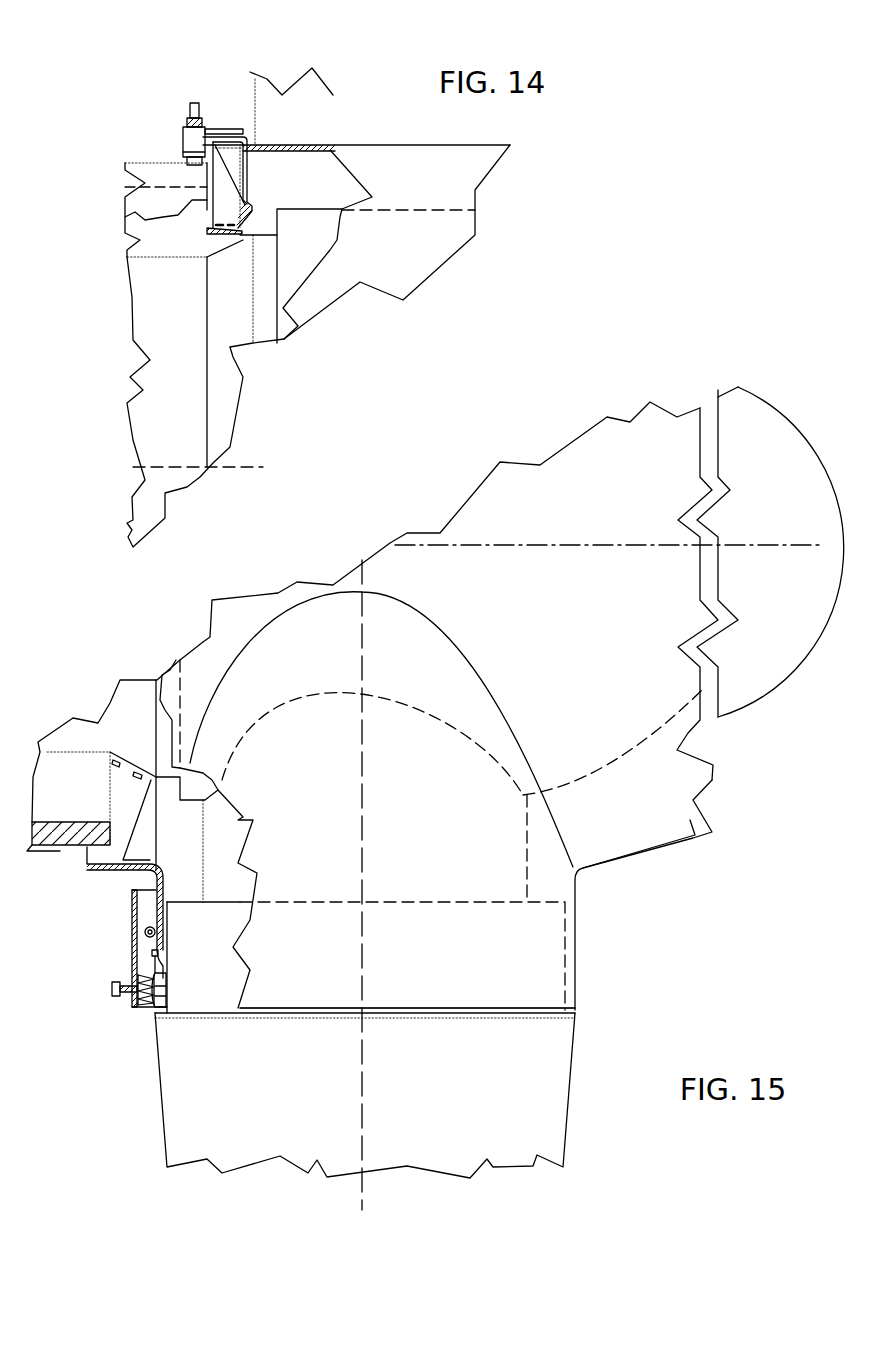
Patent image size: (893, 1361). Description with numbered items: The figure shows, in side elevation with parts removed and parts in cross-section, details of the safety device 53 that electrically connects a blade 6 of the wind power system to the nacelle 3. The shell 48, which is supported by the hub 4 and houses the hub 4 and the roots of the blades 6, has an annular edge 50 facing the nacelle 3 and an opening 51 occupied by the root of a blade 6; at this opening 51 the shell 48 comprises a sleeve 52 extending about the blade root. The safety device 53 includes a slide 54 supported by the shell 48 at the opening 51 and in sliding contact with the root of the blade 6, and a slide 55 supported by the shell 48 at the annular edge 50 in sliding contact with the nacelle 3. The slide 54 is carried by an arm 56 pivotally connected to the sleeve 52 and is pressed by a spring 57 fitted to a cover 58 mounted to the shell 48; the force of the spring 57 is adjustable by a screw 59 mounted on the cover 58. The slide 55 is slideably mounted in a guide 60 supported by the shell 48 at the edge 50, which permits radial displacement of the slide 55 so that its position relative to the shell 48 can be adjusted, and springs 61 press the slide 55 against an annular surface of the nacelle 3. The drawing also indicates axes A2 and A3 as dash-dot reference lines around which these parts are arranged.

In FIG. 14, the nacelle 3 is at (167, 175).
In FIG. 15, the nacelle 3 is at (57, 838).
In FIG. 15, the hub 4 is at (604, 763).
In FIG. 15, the blade 6 is at (232, 1187).
In FIG. 15, the shell 48 is at (740, 667).
In FIG. 15, the annular edge 50 is at (88, 879).
In FIG. 15, the opening 51 is at (514, 1022).
In FIG. 15, the sleeve 52 is at (573, 942).
In FIG. 14, the safety device 53 is at (287, 58).
In FIG. 15, the slide 54 is at (161, 978).
In FIG. 14, the slide 55 is at (195, 167).
In FIG. 15, the arm 56 is at (153, 950).
In FIG. 15, the spring 57 is at (147, 1007).
In FIG. 15, the cover 58 is at (133, 961).
In FIG. 15, the screw 59 is at (113, 997).
In FIG. 14, the guide 60 is at (188, 143).
In FIG. 14, the springs 61 is at (201, 117).
In FIG. 14, the axis A2 is at (190, 467).
In FIG. 15, the axis A2 is at (562, 548).
In FIG. 15, the axis A3 is at (361, 1140).